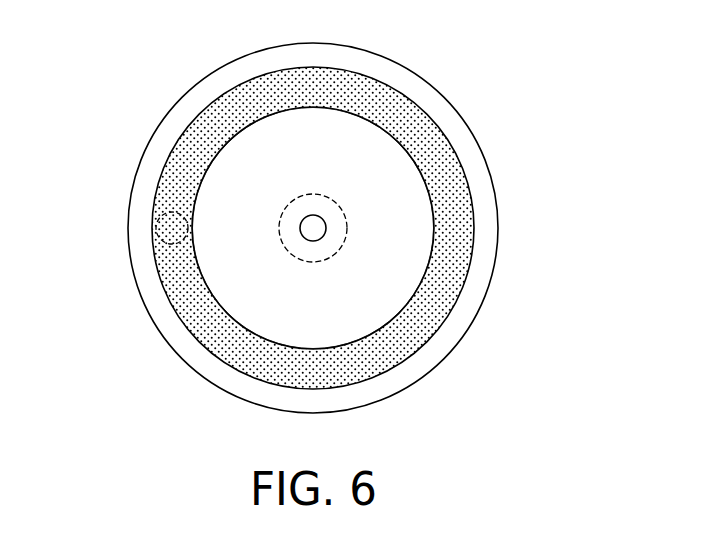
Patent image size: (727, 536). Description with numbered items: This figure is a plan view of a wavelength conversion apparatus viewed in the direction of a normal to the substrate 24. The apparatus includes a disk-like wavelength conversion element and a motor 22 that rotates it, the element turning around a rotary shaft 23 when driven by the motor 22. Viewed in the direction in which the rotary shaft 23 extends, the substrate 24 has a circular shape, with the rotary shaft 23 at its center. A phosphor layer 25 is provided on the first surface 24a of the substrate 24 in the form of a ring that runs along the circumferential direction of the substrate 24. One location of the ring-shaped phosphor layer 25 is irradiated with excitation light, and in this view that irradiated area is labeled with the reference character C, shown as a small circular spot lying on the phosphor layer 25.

The motor 22 is at (347, 227).
The rotary shaft 23 is at (320, 216).
The substrate 24 is at (402, 291).
The first surface 24a is at (313, 228).
The phosphor layer 25 is at (193, 313).
The area irradiated with the excitation light C is at (158, 215).